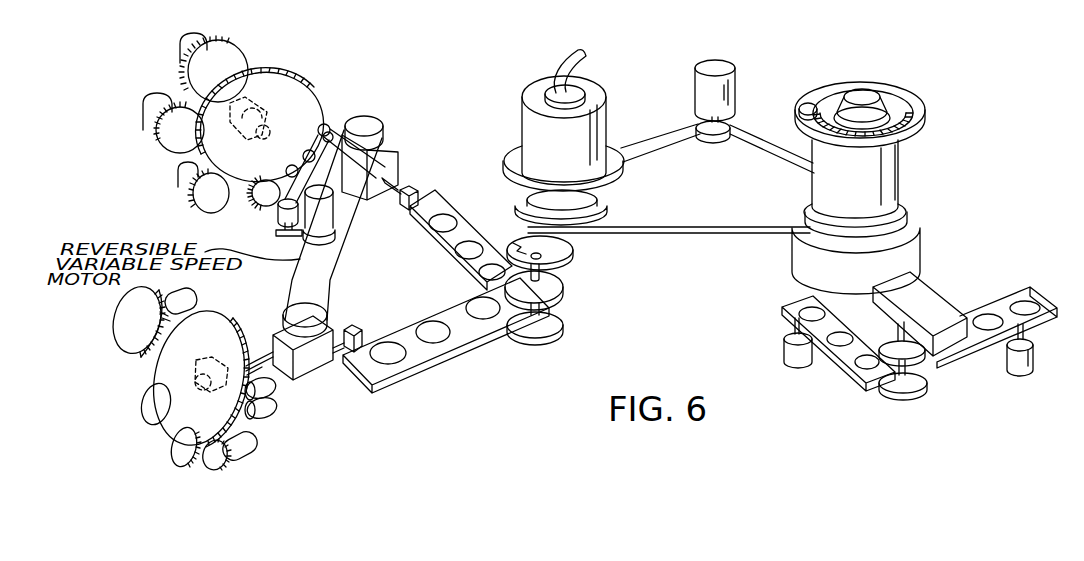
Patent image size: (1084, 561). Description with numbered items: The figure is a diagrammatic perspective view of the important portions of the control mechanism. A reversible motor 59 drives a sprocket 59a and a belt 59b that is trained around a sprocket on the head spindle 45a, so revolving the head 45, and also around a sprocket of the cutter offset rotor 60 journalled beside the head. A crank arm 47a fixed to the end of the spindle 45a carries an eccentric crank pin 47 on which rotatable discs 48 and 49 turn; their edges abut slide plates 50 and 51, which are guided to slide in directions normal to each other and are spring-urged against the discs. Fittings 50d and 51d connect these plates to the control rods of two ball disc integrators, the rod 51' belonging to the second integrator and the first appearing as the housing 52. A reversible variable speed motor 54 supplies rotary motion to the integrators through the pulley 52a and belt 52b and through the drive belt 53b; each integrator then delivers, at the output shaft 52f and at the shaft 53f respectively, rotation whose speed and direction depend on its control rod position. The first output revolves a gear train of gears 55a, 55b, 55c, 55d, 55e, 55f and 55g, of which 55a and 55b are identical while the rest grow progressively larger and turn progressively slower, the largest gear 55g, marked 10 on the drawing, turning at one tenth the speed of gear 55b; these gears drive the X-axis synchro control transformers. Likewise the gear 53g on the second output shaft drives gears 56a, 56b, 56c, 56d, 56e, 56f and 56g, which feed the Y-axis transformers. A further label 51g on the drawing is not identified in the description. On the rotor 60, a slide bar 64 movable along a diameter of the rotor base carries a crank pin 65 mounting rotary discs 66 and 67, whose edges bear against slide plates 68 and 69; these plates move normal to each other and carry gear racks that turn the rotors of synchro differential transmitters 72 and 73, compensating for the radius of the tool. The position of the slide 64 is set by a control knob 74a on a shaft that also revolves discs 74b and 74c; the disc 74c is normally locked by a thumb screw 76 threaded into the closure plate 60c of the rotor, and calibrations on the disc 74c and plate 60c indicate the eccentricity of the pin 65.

The article 10 is at (185, 393).
The head 45 is at (603, 130).
The head spindle 45a is at (570, 237).
The crank pin 47 is at (560, 273).
The crank arm 47a is at (530, 239).
The rotatable disc 48 is at (558, 288).
The rotatable disc 49 is at (557, 316).
The slide plate 50 is at (473, 330).
The fitting 50d is at (360, 325).
The slide plate 51 is at (461, 240).
The control rod 51' is at (417, 169).
The fitting 51d is at (411, 193).
The shaft 51g is at (244, 370).
The ball disc integrator 52 is at (313, 360).
The pulley 52a is at (307, 312).
The belt 52b is at (331, 267).
The output shaft 52f is at (270, 364).
The drive belt 53b is at (344, 207).
The output shaft 53f is at (318, 130).
The gear 53g is at (329, 127).
The reversible variable speed motor 54 is at (327, 217).
The gear 55a is at (247, 397).
The gear 55b is at (245, 418).
The gear 55c is at (213, 466).
The gear 55d is at (190, 453).
The gear 55e is at (158, 415).
The gear 55f is at (135, 342).
The gear 55g is at (200, 357).
The gear 56a is at (302, 156).
The gear 56b is at (286, 171).
The gear 56c is at (256, 207).
The gear 56d is at (212, 193).
The gear 56e is at (175, 143).
The gear 56f is at (243, 62).
The gear 56g is at (292, 90).
The reversible motor 59 is at (697, 83).
The sprocket 59a is at (371, 124).
The belt 59b is at (650, 225).
The cutter offset rotor 60 is at (887, 180).
The closure plate 60c is at (918, 124).
The slide bar 64 is at (922, 307).
The crank pin 65 is at (892, 394).
The rotary disc 66 is at (922, 360).
The rotary disc 67 is at (917, 396).
The slide plate 68 is at (1036, 300).
The slide plate 69 is at (866, 376).
The synchro differential transmitter 72 is at (1003, 367).
The synchro differential transmitter 73 is at (793, 362).
The control knob 74a is at (864, 94).
The disc 74b is at (835, 112).
The calibrated disc 74c is at (910, 110).
The thumb screw 76 is at (805, 104).